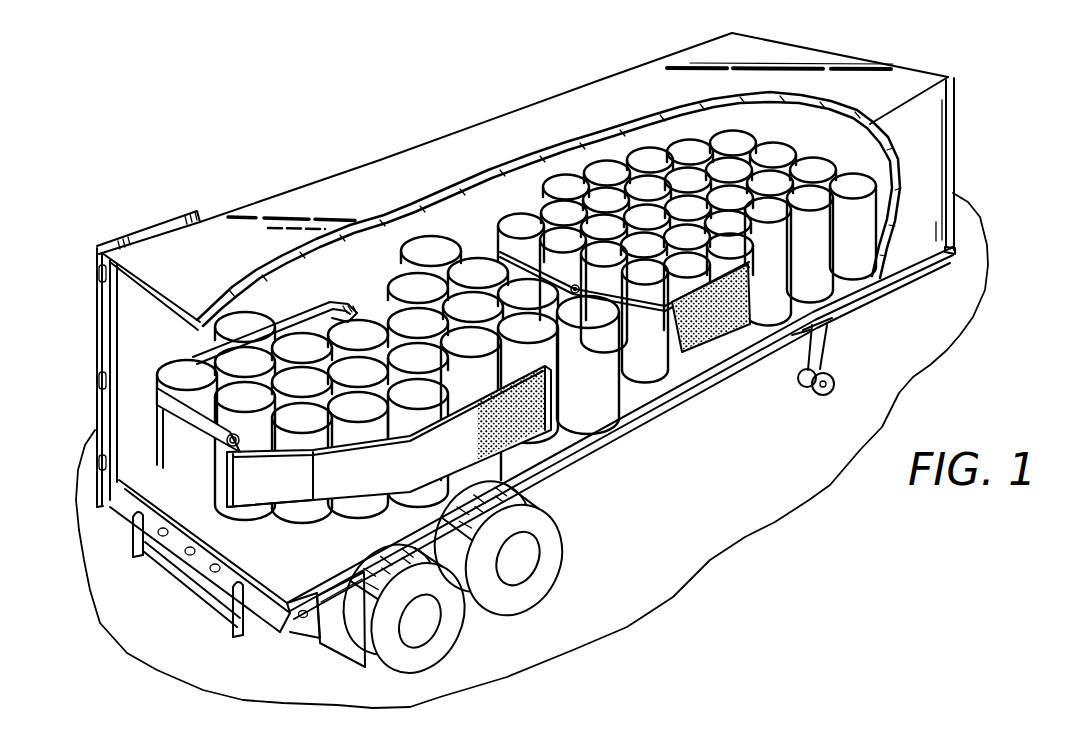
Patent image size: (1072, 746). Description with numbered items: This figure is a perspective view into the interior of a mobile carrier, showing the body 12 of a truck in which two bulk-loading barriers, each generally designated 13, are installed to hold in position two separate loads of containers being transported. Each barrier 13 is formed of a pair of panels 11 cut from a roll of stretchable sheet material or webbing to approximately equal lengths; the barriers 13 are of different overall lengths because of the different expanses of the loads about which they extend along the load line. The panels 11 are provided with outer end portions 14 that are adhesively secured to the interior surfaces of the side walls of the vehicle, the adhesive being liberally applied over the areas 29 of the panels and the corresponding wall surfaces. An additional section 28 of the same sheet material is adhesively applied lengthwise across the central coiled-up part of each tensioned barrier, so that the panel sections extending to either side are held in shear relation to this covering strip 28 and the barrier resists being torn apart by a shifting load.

The panels 11 is at (196, 353).
The body 12 is at (563, 440).
The load barrier 13 is at (218, 434).
The outer end portions 14 is at (302, 310).
The additional section 28 is at (253, 487).
The adhesive areas 29 is at (508, 405).